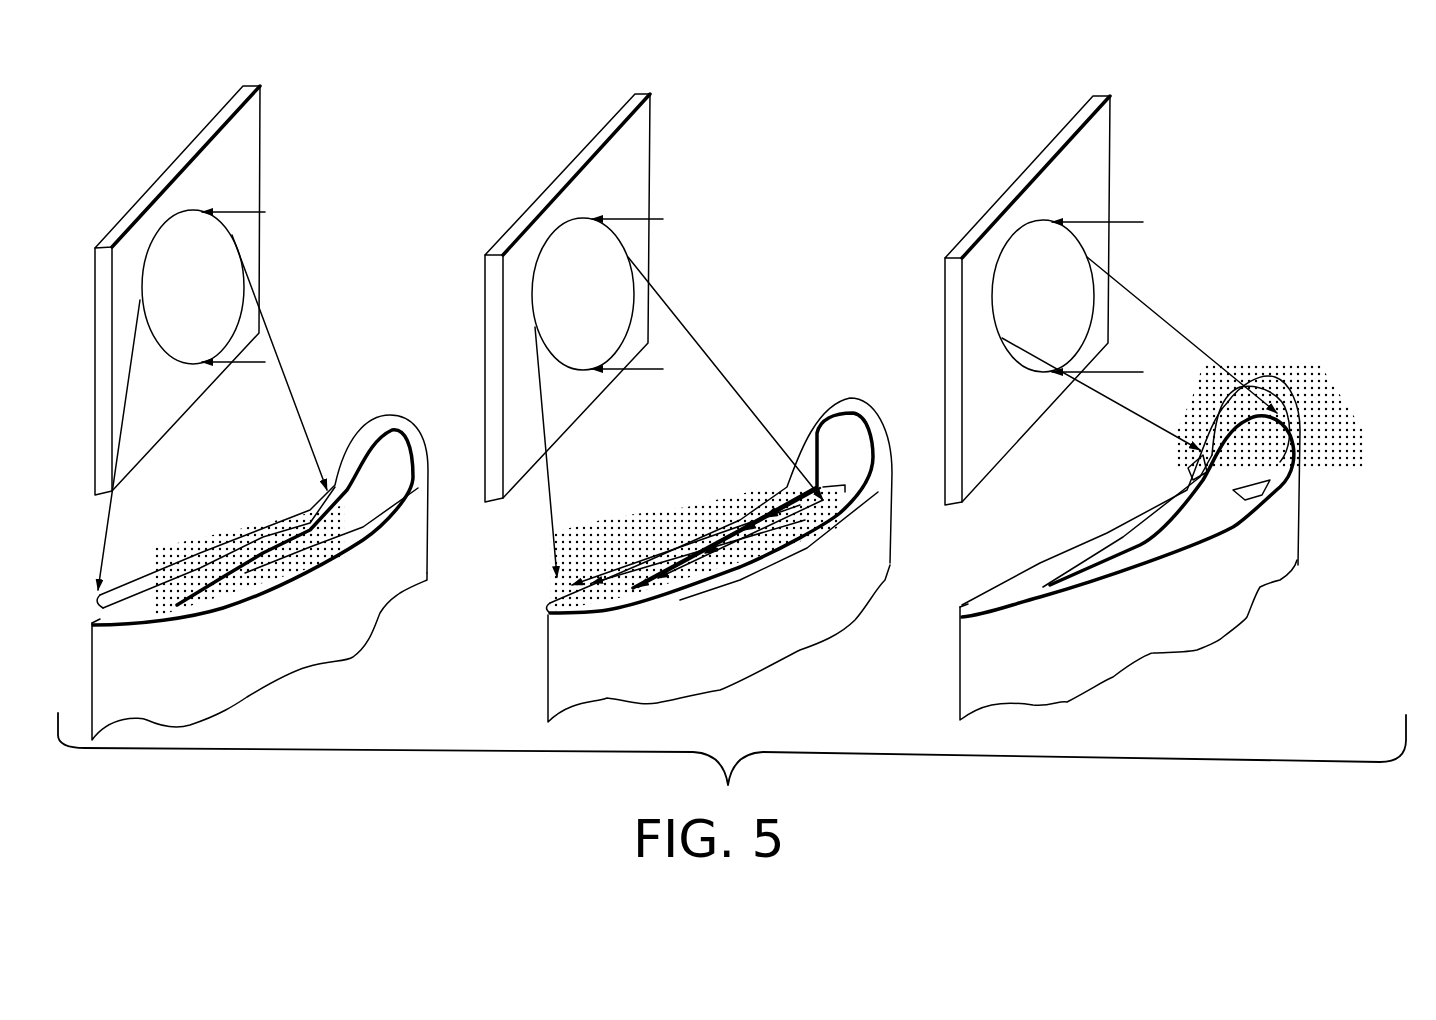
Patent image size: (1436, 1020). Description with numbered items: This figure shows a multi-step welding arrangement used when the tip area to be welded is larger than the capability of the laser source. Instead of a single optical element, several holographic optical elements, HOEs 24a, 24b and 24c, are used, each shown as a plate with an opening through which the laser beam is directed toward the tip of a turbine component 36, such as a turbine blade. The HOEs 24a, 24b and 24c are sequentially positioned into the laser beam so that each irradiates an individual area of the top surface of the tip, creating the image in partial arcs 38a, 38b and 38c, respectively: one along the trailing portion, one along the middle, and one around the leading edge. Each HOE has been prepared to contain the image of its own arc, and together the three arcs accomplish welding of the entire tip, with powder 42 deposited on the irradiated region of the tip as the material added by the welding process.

The HOE 24a is at (190, 140).
The HOE 24b is at (593, 135).
The HOE 24c is at (1055, 133).
The turbine component 36 is at (313, 650).
The partial arc 38a is at (287, 503).
The partial arc 38b is at (775, 530).
The partial arc 38c is at (1213, 453).
The powder 42 is at (227, 517).